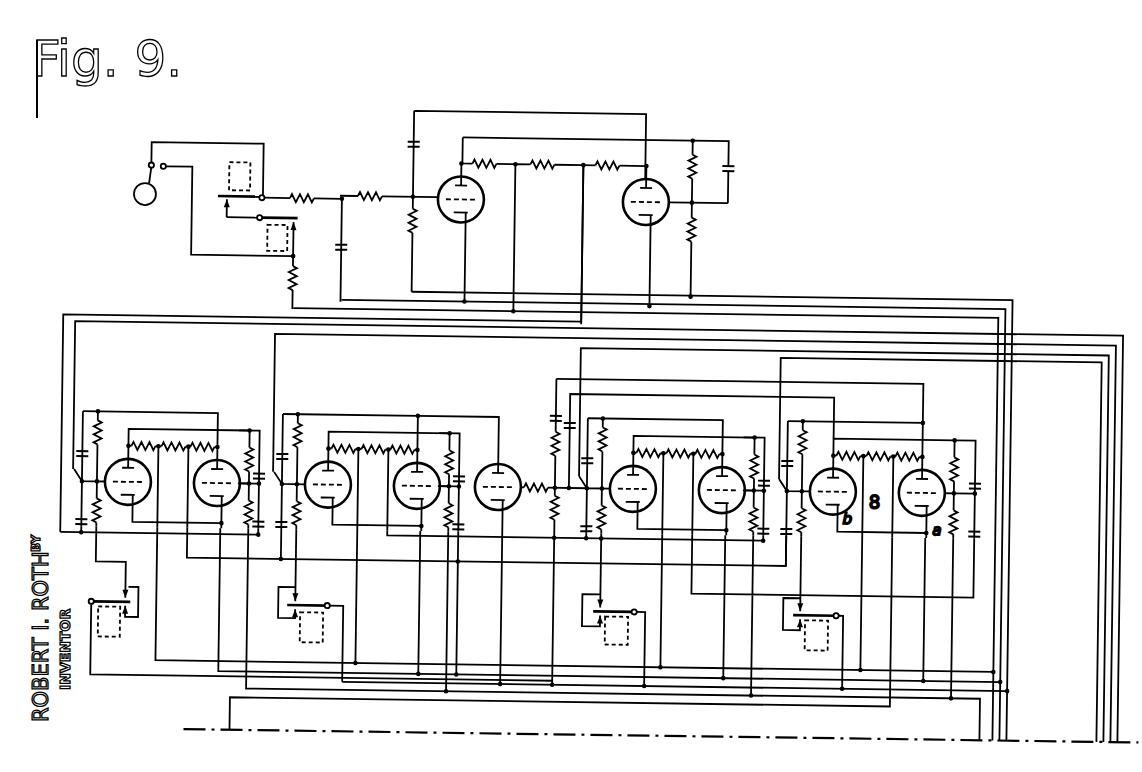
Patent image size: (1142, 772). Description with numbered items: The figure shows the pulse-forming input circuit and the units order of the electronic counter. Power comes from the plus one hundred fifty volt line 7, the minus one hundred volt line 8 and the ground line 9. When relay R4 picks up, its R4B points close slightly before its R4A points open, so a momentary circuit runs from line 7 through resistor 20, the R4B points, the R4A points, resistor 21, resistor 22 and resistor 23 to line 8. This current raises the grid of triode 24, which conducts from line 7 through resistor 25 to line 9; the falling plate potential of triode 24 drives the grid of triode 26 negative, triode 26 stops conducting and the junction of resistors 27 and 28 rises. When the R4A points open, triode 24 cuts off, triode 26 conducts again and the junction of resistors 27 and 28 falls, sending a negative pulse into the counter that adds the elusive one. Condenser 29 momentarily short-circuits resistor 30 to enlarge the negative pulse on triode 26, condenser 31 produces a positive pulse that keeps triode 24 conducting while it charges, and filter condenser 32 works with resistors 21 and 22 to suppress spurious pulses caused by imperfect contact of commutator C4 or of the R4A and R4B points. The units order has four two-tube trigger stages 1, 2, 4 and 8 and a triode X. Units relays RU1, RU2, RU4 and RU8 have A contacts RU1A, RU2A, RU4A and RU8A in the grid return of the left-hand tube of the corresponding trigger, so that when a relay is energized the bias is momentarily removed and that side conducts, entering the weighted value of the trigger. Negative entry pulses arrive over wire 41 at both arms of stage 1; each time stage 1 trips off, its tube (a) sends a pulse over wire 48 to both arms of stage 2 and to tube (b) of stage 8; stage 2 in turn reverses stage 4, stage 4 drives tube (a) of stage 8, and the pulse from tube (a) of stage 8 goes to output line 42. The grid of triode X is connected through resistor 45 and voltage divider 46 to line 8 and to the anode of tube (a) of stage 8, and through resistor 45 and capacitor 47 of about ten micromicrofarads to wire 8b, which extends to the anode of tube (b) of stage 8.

The commutator C4 is at (134, 198).
The relay R4 is at (252, 178).
The relay points R4A is at (232, 204).
The relay points R4B is at (292, 216).
The resistor 20 is at (299, 280).
The resistor 21 is at (306, 198).
The resistor 22 is at (353, 198).
The resistor 23 is at (416, 232).
The triode 24 is at (474, 218).
The resistor 25 is at (478, 160).
The triode 26 is at (632, 218).
The resistor 27 is at (538, 168).
The resistor 28 is at (614, 168).
The condenser 29 is at (734, 170).
The resistor 30 is at (689, 164).
The condenser 31 is at (408, 146).
The filter condenser 32 is at (346, 248).
The line 7 is at (291, 309).
The line 8 is at (409, 294).
The ground line 9 is at (342, 303).
The wire 8b is at (838, 410).
The wire 41 is at (61, 490).
The output line 42 is at (832, 702).
The resistor 45 is at (548, 504).
The voltage divider 46 is at (553, 444).
The capacitor 47 is at (551, 414).
The wire 48 is at (468, 563).
The triode X is at (500, 458).
The trigger stage 1 is at (169, 469).
The trigger stage 2 is at (369, 472).
The trigger stage 4 is at (674, 476).
The units relay RU1 is at (124, 642).
The relay A contacts RU1A is at (124, 598).
The units relay RU2 is at (302, 642).
The relay A contacts RU2A is at (304, 606).
The units relay RU4 is at (608, 644).
The relay A contacts RU4A is at (604, 610).
The units relay RU8 is at (808, 645).
The relay A contacts RU8A is at (804, 611).